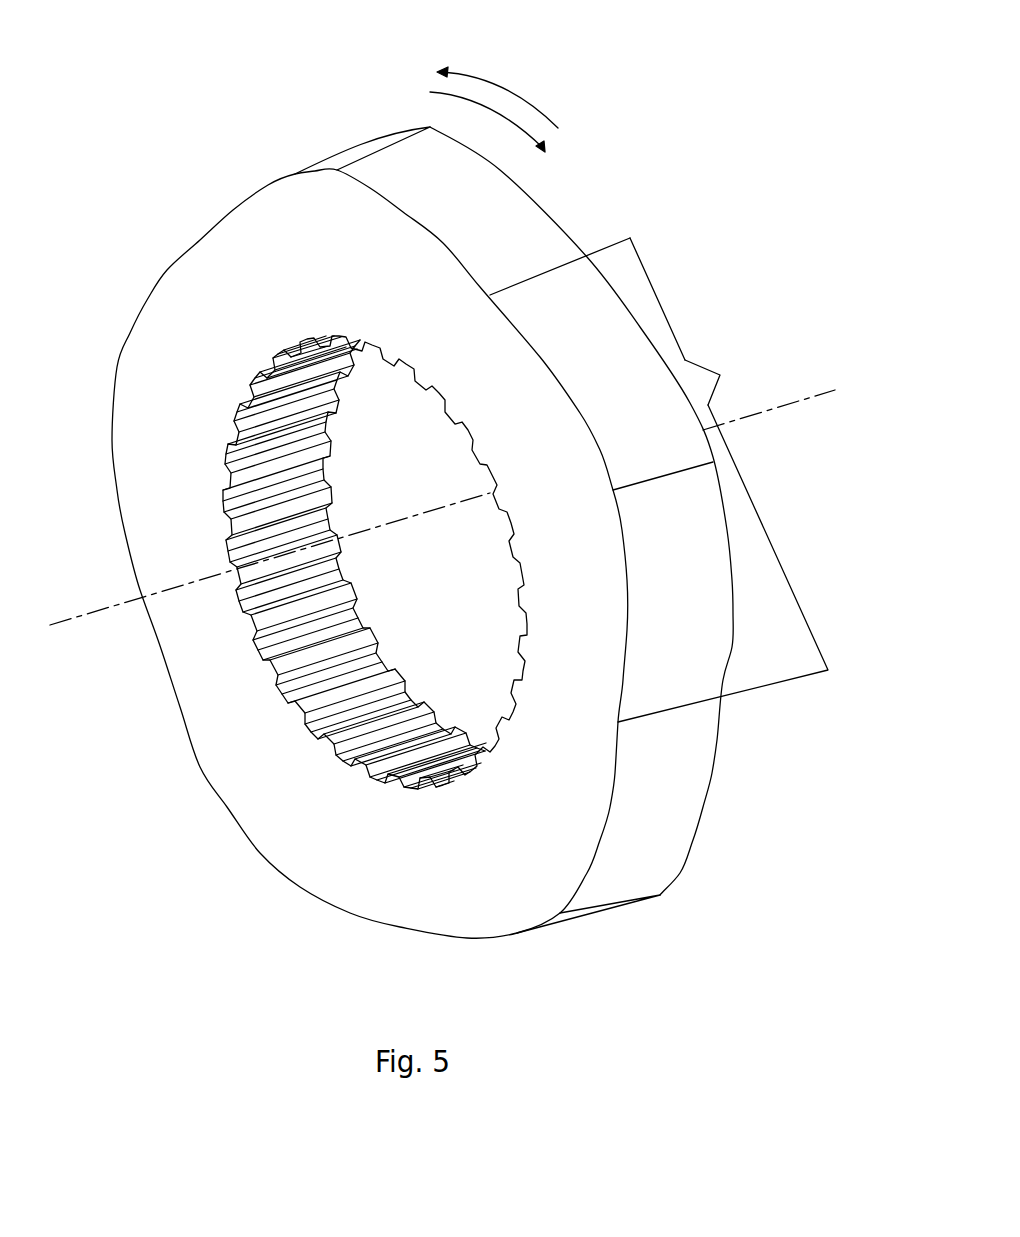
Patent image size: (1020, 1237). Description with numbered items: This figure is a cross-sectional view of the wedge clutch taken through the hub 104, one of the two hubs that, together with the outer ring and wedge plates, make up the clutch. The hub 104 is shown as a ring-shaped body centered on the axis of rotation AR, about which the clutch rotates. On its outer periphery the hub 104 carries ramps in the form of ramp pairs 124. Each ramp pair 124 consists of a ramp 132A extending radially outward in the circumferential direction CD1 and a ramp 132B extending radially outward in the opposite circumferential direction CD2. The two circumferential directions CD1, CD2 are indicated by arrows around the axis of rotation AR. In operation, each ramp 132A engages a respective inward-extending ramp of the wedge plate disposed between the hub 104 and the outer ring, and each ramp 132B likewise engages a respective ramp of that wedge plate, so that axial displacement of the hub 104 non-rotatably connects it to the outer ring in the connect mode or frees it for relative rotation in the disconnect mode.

The hub 104 is at (697, 68).
The ramp pairs 124 is at (721, 374).
The ramp 132A is at (695, 559).
The ramp 132B is at (595, 321).
The axis of rotation AR is at (77, 605).
The circumferential direction CD1 is at (505, 90).
The circumferential direction CD2 is at (436, 90).